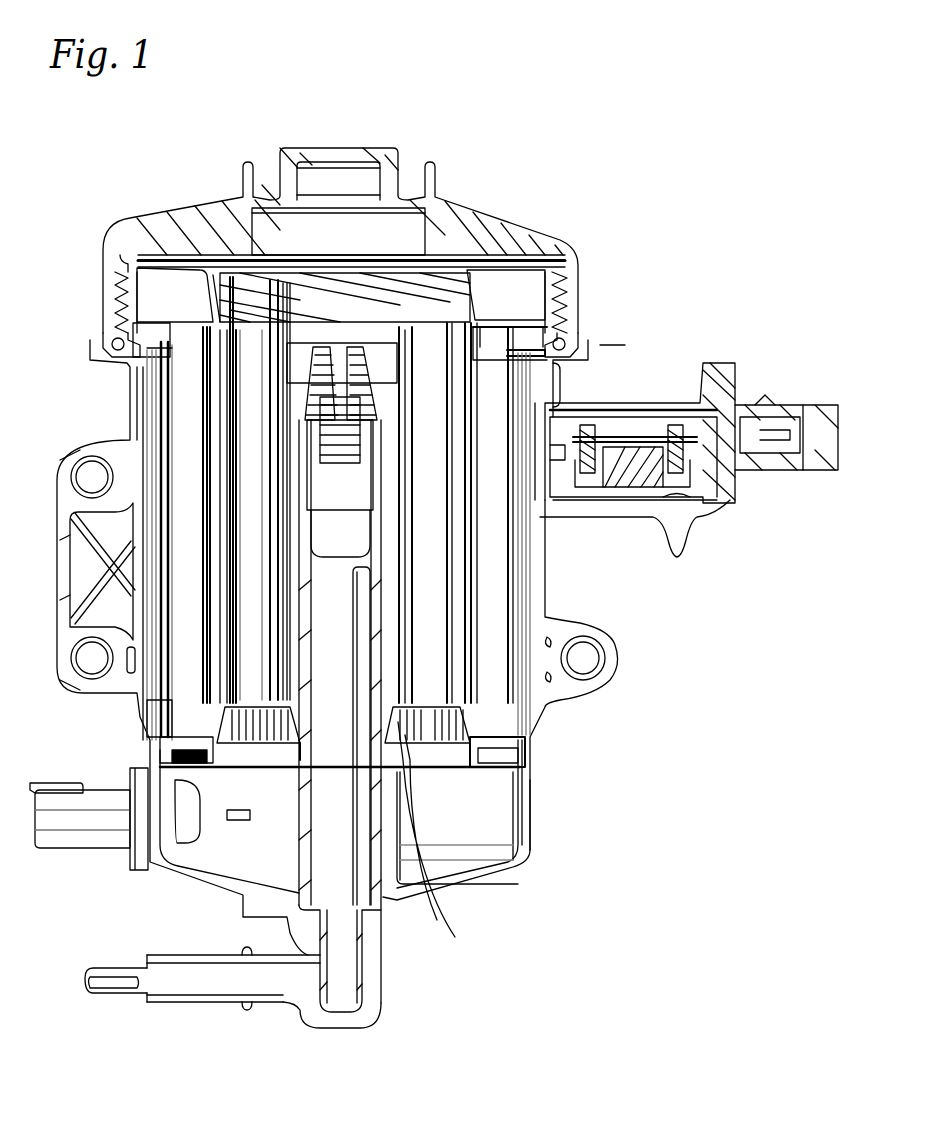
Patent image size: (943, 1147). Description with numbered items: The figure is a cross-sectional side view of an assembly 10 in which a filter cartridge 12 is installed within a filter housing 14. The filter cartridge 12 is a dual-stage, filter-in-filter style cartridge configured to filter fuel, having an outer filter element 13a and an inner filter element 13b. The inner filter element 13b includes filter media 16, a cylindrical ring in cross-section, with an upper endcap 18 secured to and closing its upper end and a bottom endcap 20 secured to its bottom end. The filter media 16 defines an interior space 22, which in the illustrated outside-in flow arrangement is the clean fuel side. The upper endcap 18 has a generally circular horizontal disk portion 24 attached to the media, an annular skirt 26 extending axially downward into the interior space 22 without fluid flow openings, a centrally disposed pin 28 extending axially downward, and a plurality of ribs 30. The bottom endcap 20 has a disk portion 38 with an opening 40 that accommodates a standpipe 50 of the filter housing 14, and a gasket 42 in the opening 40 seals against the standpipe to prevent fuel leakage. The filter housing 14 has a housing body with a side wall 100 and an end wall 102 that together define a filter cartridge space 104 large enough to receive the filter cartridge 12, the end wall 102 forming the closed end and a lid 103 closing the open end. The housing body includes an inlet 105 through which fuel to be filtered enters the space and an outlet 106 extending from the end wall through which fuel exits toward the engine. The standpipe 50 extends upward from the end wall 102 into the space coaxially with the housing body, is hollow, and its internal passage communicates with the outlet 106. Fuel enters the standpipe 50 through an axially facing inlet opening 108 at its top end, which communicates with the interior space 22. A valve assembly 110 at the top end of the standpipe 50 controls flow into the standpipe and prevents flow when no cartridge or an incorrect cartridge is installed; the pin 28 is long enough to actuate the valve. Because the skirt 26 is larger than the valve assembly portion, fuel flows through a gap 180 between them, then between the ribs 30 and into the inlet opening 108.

The assembly 10 is at (628, 356).
The filter cartridge 12 is at (180, 420).
The outer filter element 13a is at (183, 682).
The inner filter element 13b is at (433, 652).
The filter housing 14 is at (552, 597).
The filter media 16 is at (392, 400).
The upper endcap 18 is at (430, 273).
The bottom endcap 20 is at (462, 868).
The interior space 22 is at (283, 640).
The disk portion 24 is at (262, 275).
The annular skirt 26 is at (550, 292).
The pin 28 is at (232, 327).
The ribs 30 is at (205, 262).
The disk portion 38 is at (200, 845).
The opening 40 is at (250, 710).
The gasket 42 is at (428, 722).
The standpipe 50 is at (297, 588).
The side wall 100 is at (541, 557).
The end wall 102 is at (502, 872).
The lid 103 is at (180, 207).
The filter cartridge space 104 is at (167, 453).
The inlet 105 is at (765, 405).
The outlet 106 is at (185, 985).
The inlet opening 108 is at (310, 347).
The valve assembly 110 is at (300, 394).
The gap 180 is at (390, 380).